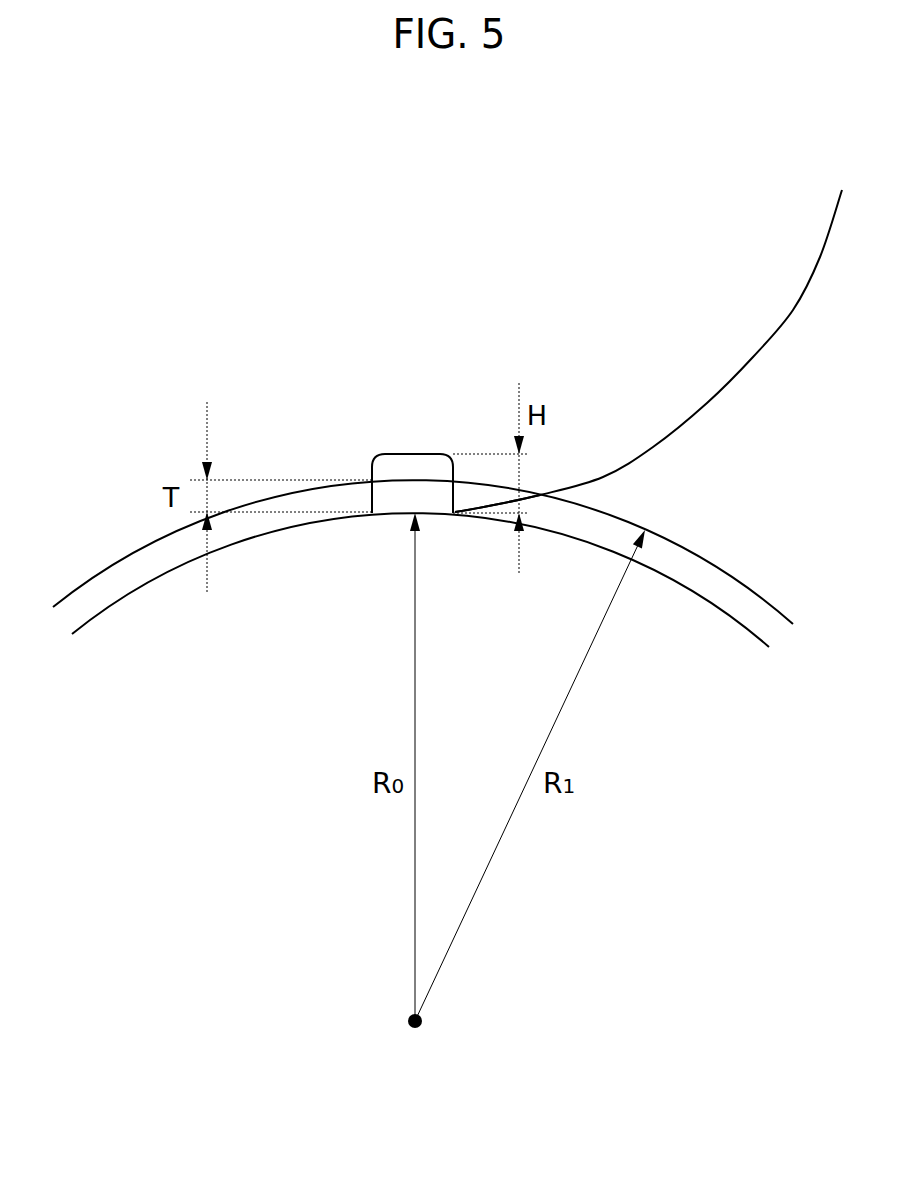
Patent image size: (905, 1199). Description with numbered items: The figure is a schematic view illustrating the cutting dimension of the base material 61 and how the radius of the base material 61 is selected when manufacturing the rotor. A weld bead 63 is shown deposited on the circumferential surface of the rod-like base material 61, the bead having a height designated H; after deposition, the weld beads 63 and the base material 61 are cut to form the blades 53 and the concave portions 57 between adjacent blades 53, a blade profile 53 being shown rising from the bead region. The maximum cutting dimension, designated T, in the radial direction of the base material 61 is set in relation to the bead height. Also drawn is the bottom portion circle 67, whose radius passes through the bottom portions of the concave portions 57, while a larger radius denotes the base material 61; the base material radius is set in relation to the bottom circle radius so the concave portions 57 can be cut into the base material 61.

The blade 53 is at (792, 307).
The concave portion 57 is at (487, 507).
The base material 61 is at (732, 575).
The weld bead 63 is at (397, 465).
The bottom portion circle 67 is at (667, 575).